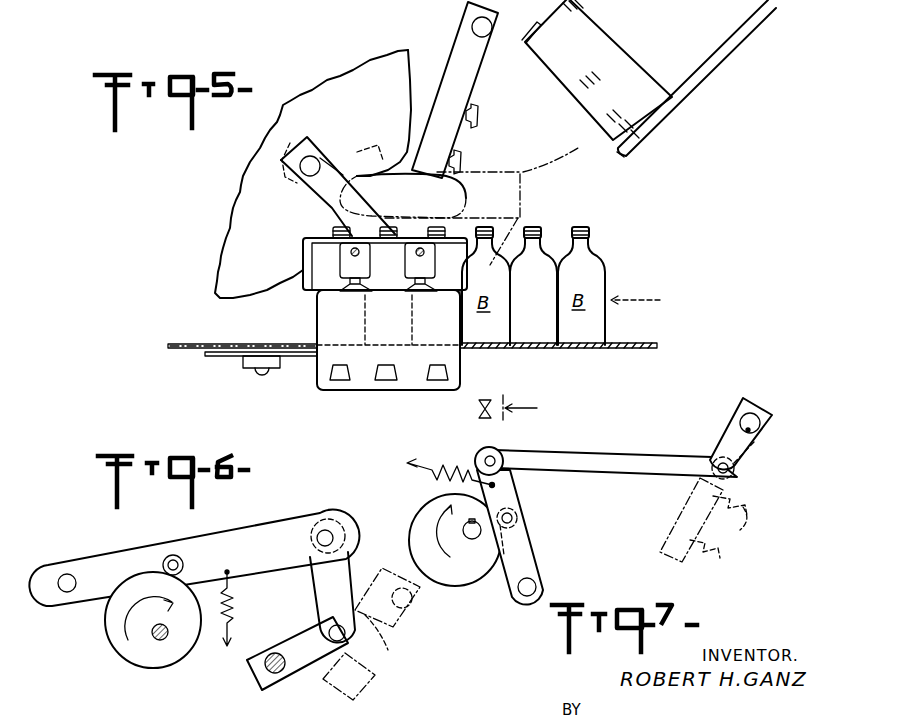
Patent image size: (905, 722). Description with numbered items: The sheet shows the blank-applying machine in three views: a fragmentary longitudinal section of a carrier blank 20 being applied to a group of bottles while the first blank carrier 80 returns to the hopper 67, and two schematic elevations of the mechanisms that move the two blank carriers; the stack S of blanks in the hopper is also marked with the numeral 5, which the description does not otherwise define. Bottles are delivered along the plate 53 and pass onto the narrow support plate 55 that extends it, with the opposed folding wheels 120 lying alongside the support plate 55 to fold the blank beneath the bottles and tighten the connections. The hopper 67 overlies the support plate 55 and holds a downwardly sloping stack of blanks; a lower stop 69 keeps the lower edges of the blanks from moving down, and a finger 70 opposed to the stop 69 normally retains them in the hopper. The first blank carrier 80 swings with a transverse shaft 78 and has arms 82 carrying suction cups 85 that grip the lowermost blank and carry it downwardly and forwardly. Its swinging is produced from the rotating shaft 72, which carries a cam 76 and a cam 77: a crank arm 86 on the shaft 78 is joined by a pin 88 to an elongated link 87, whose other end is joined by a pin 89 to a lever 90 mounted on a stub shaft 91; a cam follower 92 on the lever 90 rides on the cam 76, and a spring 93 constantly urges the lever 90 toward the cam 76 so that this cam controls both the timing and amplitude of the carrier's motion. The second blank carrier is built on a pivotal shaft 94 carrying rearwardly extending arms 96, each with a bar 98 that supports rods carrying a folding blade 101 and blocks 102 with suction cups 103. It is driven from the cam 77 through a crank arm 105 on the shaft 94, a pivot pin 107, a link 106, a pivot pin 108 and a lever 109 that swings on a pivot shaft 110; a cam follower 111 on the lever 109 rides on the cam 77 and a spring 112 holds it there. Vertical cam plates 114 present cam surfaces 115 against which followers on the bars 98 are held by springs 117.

In FIG. 5, the bottle handling machine 5 is at (628, 62).
In FIG. 5, the carrier blank 20 is at (316, 382).
In FIG. 5, the plate 53 is at (650, 325).
In FIG. 5, the support plate 55 is at (203, 326).
In FIG. 5, the hopper 67 is at (714, 52).
In FIG. 5, the lower stop 69 is at (618, 152).
In FIG. 5, the finger 70 is at (527, 44).
In FIG. 6, the rotating shaft 72 is at (160, 643).
In FIG. 7, the rotating shaft 72 is at (478, 538).
In FIG. 7, the cam 76 is at (455, 586).
In FIG. 6, the cam 77 is at (121, 646).
In FIG. 5, the transverse shaft 78 is at (486, 32).
In FIG. 7, the transverse shaft 78 is at (754, 420).
In FIG. 7, the first blank carrier 80 is at (688, 494).
In FIG. 5, the arms 82 is at (470, 20).
In FIG. 5, the suction cups 85 is at (477, 118).
In FIG. 7, the suction cups 85 is at (712, 556).
In FIG. 7, the crank arm 86 is at (732, 433).
In FIG. 7, the link 87 is at (604, 428).
In FIG. 7, the pin 88 is at (736, 474).
In FIG. 7, the pin 89 is at (497, 460).
In FIG. 7, the lever 90 is at (513, 500).
In FIG. 7, the stub shaft 91 is at (536, 585).
In FIG. 7, the cam follower 92 is at (517, 521).
In FIG. 7, the spring 93 is at (456, 447).
In FIG. 5, the shaft 94 is at (314, 163).
In FIG. 6, the shaft 94 is at (263, 670).
In FIG. 5, the arms 96 is at (385, 147).
In FIG. 6, the arms 96 is at (363, 597).
In FIG. 5, the bar 98 is at (510, 205).
In FIG. 6, the bar 98 is at (376, 678).
In FIG. 5, the folding blade 101 is at (450, 284).
In FIG. 5, the block 102 is at (406, 270).
In FIG. 5, the suction cup 103 is at (420, 298).
In FIG. 6, the crank arm 105 is at (298, 637).
In FIG. 6, the link 106 is at (320, 588).
In FIG. 6, the pivot pin 107 is at (340, 643).
In FIG. 6, the pivot pin 108 is at (327, 537).
In FIG. 6, the lever 109 is at (258, 517).
In FIG. 6, the pivot shaft 110 is at (72, 577).
In FIG. 6, the cam follower 111 is at (182, 555).
In FIG. 6, the spring 112 is at (233, 617).
In FIG. 5, the cam plate 114 is at (353, 78).
In FIG. 5, the cam surface 115 is at (221, 303).
In FIG. 6, the spring 117 is at (390, 645).
In FIG. 5, the folding wheel 120 is at (232, 362).